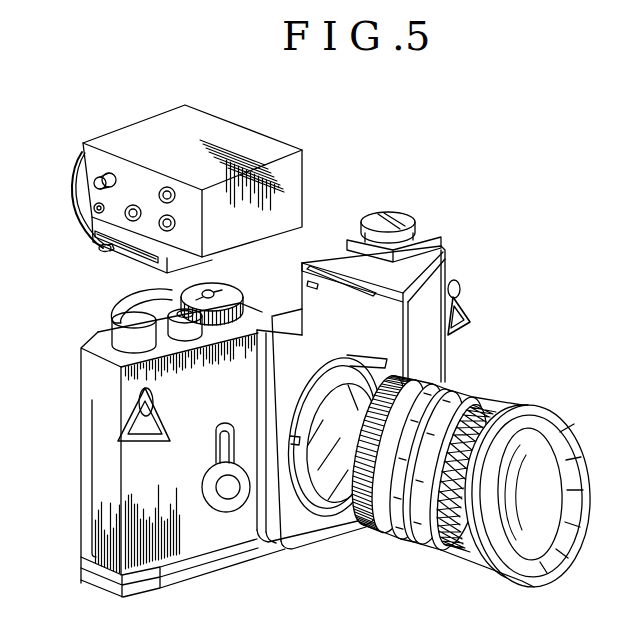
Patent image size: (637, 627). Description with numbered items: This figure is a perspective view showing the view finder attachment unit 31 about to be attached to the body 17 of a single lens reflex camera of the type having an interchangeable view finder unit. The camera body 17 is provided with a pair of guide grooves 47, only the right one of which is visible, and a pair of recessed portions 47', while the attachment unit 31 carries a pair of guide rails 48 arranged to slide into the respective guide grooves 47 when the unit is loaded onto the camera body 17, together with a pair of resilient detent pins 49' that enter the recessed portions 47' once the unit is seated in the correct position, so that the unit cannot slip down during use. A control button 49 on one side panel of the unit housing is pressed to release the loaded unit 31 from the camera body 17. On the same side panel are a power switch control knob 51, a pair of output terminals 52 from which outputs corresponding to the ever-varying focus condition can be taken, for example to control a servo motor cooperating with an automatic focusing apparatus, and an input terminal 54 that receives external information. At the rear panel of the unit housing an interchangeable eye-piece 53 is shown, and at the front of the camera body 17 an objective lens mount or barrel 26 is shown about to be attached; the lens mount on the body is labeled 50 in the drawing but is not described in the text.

The camera body 17 is at (494, 267).
The objective lens mount or barrel 26 is at (570, 423).
The attachment unit 31 is at (124, 121).
The guide grooves 47 is at (318, 287).
The recessed portions 47' is at (289, 269).
The guide rails 48 is at (137, 251).
The control button 49 is at (62, 215).
The resilient detent pins 49' is at (78, 255).
The lens mount 50 is at (386, 366).
The power switch control knob 51 is at (100, 171).
The output terminals 52 is at (167, 189).
The interchangeable eye-piece 53 is at (72, 185).
The input terminal 54 is at (137, 206).